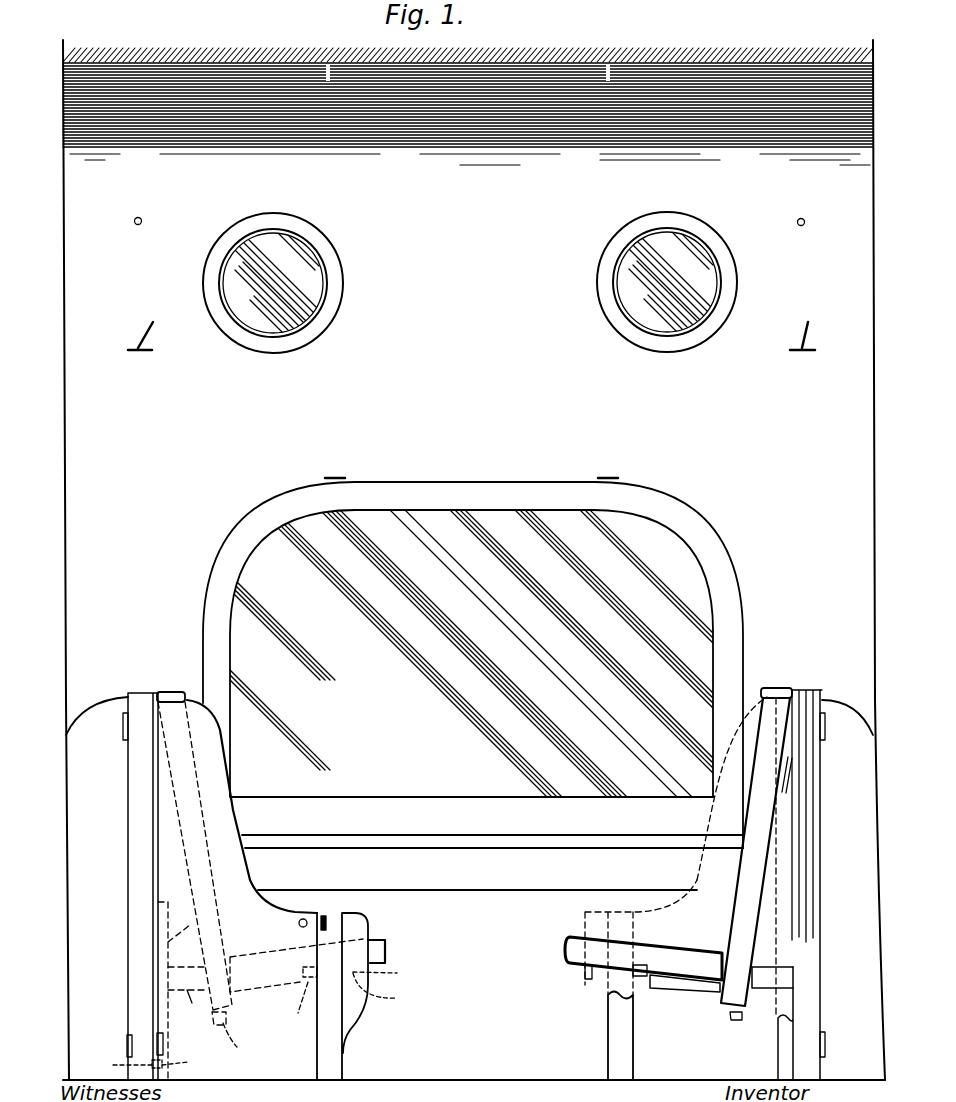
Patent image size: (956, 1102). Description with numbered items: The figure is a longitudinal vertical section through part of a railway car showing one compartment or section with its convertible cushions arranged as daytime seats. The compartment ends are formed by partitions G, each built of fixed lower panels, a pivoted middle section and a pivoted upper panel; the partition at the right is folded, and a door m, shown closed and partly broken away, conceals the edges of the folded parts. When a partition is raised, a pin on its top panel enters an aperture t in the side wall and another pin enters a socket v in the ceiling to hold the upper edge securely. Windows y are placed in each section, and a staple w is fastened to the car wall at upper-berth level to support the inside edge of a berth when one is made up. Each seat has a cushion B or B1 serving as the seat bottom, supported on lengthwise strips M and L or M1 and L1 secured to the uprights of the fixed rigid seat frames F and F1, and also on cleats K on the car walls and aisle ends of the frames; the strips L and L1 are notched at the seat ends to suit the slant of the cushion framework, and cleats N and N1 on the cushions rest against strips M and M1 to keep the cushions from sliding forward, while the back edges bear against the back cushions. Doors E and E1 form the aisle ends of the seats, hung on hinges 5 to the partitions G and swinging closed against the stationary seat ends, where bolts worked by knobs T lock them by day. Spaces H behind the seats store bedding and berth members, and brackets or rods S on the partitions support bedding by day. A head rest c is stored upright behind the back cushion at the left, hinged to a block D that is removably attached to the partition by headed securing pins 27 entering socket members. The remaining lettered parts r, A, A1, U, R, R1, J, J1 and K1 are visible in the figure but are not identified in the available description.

The aperture or socket v is at (140, 60).
The window y is at (300, 292).
The aperture t is at (142, 219).
The bracket r is at (471, 322).
The staple w is at (347, 476).
The partition G is at (140, 782).
The door m is at (140, 820).
The hinge 5 is at (150, 730).
The seat back A is at (172, 690).
The space H is at (172, 878).
The head rest c is at (181, 991).
The door E is at (265, 948).
The knob T is at (299, 926).
The supporting strip L is at (300, 1008).
The cleat K is at (268, 985).
The rod R is at (239, 1045).
The bolt J is at (183, 1012).
The seat frame F is at (332, 1025).
The pin U is at (345, 917).
The cushion or seat member B is at (388, 948).
The supporting strip M is at (387, 974).
The cleat N is at (385, 993).
The block D is at (160, 1066).
The headed securing pin 27 is at (101, 1065).
The seat back (second seat) A1 is at (778, 690).
The bracket or rod S is at (790, 778).
The cushion or seat member B1 is at (565, 950).
The cushion frame K1 is at (698, 985).
The supporting strip M1 is at (585, 975).
The cleat N1 is at (600, 985).
The seat frame F1 is at (618, 1027).
The supporting strip L1 is at (643, 983).
The rod R1 is at (735, 1017).
The bolt J1 is at (763, 983).
The door E1 is at (785, 1042).